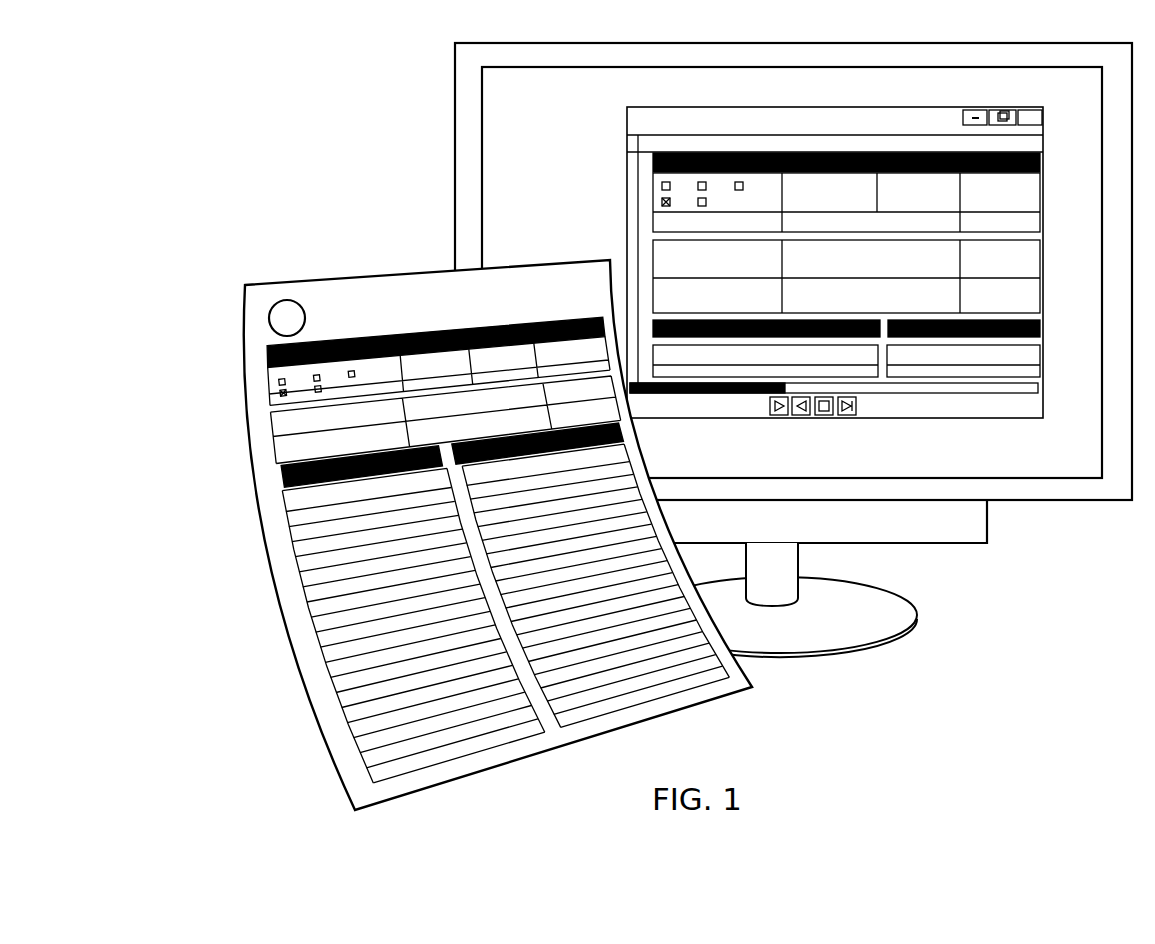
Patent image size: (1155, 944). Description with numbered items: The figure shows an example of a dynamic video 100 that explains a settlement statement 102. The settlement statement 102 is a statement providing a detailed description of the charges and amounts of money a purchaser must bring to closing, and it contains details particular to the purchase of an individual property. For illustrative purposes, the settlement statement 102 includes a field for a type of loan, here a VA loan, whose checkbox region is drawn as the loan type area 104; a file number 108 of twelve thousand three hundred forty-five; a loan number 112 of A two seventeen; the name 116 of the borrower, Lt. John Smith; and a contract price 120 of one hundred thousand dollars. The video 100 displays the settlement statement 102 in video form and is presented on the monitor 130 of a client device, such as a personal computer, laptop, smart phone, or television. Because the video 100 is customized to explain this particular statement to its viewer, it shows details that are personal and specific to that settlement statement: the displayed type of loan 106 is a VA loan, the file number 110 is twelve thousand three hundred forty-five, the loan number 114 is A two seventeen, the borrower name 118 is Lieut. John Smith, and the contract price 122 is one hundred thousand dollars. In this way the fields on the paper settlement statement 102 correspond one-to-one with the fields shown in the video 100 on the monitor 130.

The dynamic video 100 is at (627, 167).
The settlement statement 102 is at (342, 277).
The loan type checkboxes on paper form 104 is at (270, 388).
The type of loan 106 is at (658, 212).
The file number 108 is at (457, 372).
The file number 110 is at (823, 212).
The loan number 112 is at (513, 362).
The loan number 114 is at (943, 212).
The name of the borrower 116 is at (272, 430).
The borrower name field on display 118 is at (660, 260).
The contract price 120 is at (282, 505).
The contract price 122 is at (860, 362).
The monitor 130 is at (455, 135).